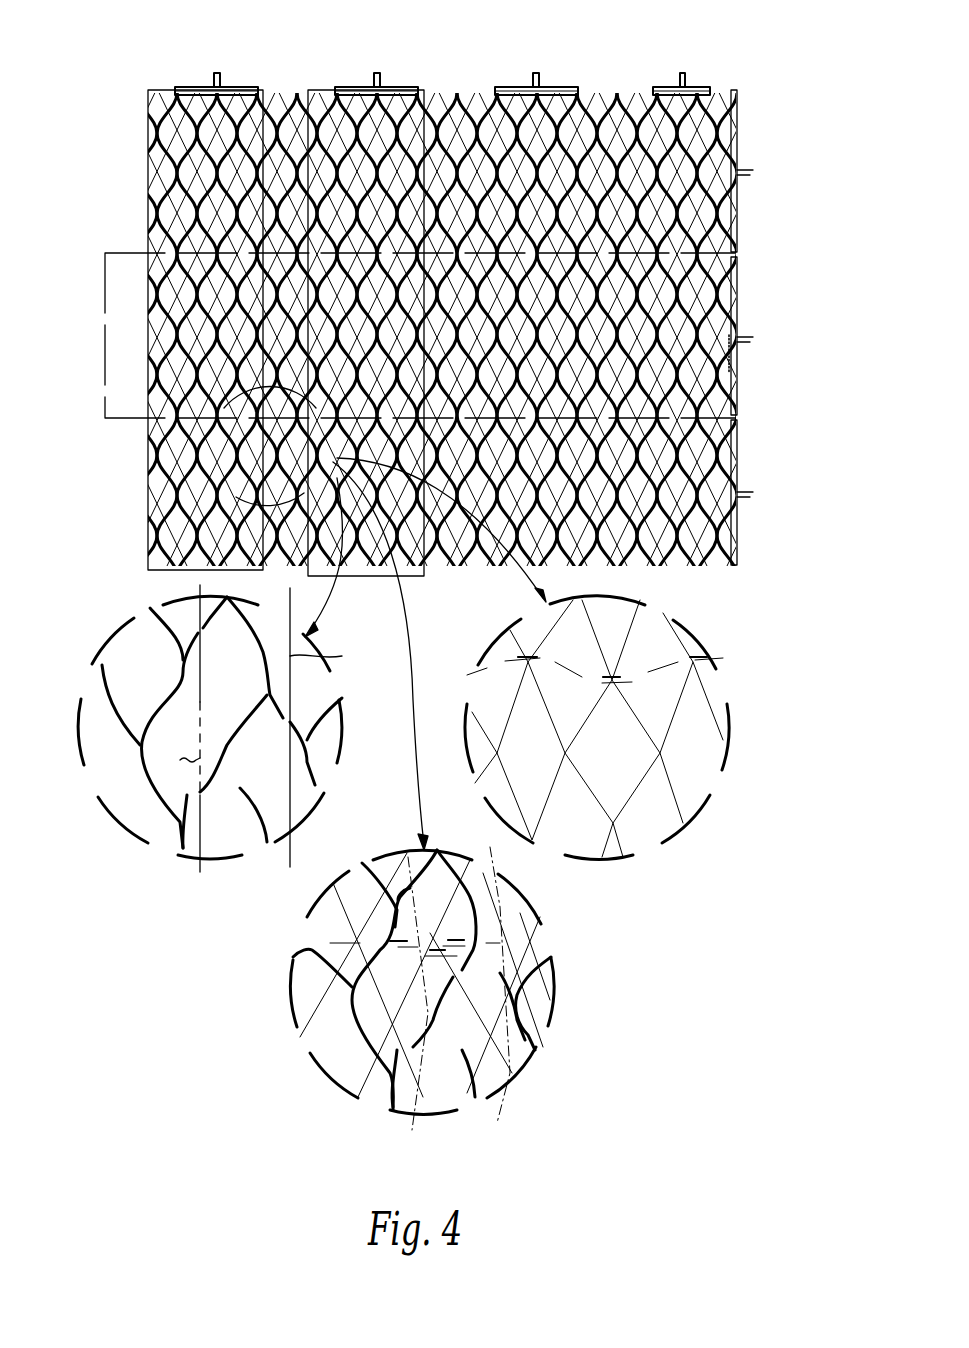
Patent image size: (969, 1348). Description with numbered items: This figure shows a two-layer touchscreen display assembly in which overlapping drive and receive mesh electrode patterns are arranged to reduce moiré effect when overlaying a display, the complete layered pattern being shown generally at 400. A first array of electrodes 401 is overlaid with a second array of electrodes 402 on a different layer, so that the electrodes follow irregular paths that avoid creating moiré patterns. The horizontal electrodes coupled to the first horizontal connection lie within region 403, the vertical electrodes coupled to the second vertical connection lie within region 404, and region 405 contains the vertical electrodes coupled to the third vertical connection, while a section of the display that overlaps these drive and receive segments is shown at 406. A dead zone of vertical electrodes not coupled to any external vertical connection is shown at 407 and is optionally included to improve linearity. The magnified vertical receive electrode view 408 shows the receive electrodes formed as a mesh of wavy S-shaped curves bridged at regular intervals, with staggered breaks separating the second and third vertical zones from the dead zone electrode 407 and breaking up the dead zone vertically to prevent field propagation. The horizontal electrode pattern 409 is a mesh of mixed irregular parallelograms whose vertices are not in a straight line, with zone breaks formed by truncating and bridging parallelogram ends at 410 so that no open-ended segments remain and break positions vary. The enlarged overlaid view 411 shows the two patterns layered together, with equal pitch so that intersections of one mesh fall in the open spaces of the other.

The pattern of electrodes 400 is at (740, 29).
The first array of electrodes 401 is at (774, 328).
The second array of electrodes 402 is at (376, 72).
The region of X1 horizontal electrodes 403 is at (104, 290).
The region of Y2 vertical electrodes 404 is at (308, 183).
The region of Y3 vertical electrodes 405 is at (148, 185).
The overlapping touchscreen display section 406 is at (205, 458).
The dead zone electrode 407 is at (287, 92).
The magnified vertical Y electrode view 408 is at (82, 752).
The X electrode pattern 409 is at (624, 728).
The bridged truncated parallelograms 410 is at (713, 657).
The enlarged overlaid electrode view 411 is at (555, 971).